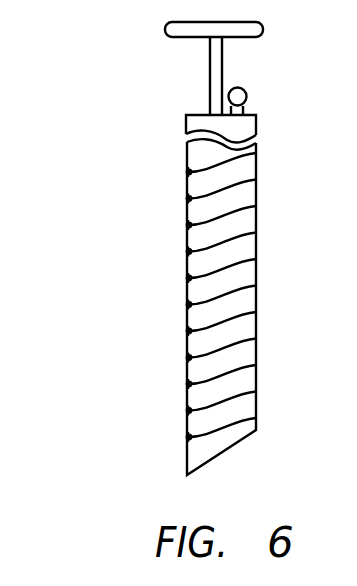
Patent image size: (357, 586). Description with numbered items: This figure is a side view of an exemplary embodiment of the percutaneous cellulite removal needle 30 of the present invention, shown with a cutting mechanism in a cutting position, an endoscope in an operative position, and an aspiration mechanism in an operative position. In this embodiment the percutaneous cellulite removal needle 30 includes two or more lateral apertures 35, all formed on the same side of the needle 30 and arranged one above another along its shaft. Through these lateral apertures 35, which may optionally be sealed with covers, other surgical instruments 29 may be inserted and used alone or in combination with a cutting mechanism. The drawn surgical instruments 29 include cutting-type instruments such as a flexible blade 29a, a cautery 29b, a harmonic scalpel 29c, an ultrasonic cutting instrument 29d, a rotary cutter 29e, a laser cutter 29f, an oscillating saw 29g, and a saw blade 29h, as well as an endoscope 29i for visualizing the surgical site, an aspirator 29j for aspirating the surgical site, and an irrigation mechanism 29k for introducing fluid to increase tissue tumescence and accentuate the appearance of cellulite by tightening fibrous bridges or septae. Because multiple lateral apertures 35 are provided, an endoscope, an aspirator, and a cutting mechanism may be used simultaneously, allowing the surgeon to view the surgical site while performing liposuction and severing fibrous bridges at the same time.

The percutaneous cellulite removal needle 30 is at (162, 71).
The surgical instruments 29 is at (50, 147).
The flexible blade 29a is at (187, 176).
The cautery 29b is at (187, 203).
The harmonic scalpel 29c is at (187, 230).
The ultrasonic cutting instrument 29d is at (187, 256).
The rotary cutter 29e is at (187, 282).
The laser cutter 29f is at (187, 309).
The oscillating saw 29g is at (187, 336).
The saw blade 29h is at (187, 362).
The endoscope 29i is at (187, 388).
The aspirator 29j is at (187, 415).
The irrigation mechanism 29k is at (187, 442).
The lateral apertures 35 is at (256, 153).